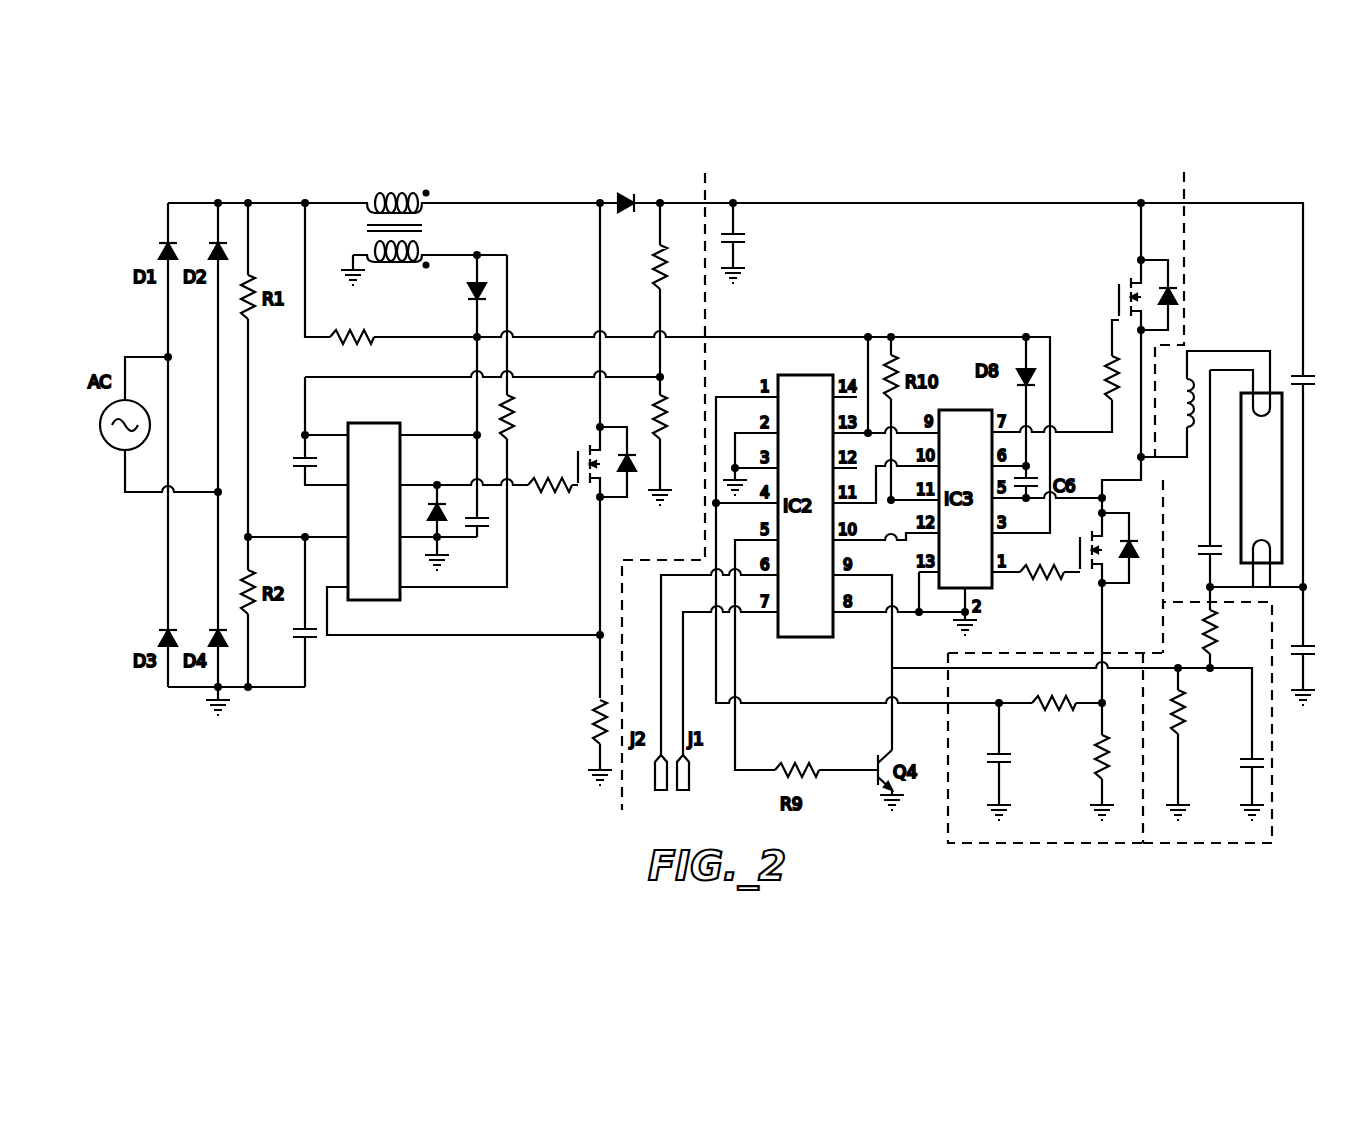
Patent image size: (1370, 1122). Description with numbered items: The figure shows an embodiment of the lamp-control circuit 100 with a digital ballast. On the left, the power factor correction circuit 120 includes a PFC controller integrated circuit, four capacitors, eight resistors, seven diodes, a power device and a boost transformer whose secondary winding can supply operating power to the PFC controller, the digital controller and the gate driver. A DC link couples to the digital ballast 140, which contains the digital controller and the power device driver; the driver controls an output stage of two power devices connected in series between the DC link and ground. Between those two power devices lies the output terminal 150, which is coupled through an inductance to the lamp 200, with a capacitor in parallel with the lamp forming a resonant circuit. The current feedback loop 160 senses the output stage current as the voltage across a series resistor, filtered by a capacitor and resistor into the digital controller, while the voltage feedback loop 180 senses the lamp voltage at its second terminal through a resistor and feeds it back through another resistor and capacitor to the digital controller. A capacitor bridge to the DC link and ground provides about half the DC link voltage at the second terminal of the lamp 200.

The lamp-control circuit 100 is at (724, 168).
The power factor correction circuit 120 is at (493, 192).
The digital ballast 140 is at (933, 192).
The output terminal 150 is at (1124, 478).
The current feedback loop 160 is at (1012, 845).
The voltage feedback loop 180 is at (1225, 845).
The lamp 200 is at (1287, 515).